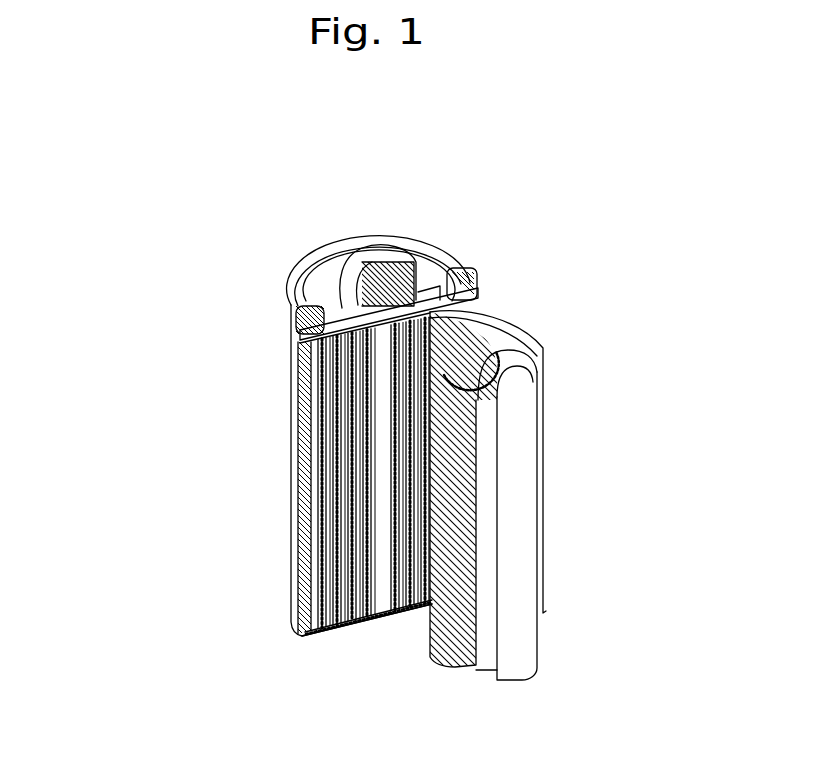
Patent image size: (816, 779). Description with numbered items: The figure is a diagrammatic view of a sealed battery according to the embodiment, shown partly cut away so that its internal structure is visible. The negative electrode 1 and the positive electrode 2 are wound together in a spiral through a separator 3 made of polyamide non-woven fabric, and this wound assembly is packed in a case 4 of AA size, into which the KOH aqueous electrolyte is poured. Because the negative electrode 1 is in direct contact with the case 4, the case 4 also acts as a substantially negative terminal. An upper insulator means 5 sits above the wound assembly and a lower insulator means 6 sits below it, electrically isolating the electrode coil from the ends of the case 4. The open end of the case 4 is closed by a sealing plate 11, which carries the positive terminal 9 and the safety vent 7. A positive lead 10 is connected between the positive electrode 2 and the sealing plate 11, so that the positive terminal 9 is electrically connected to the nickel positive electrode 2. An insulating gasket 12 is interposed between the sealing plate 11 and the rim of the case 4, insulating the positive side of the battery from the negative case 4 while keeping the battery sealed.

The negative electrode 1 is at (525, 650).
The positive electrode 2 is at (443, 663).
The separator 3 is at (578, 729).
The case 4 is at (291, 562).
The upper insulator means 5 is at (297, 338).
The lower insulator means 6 is at (353, 633).
The safety vent 7 is at (404, 268).
The positive terminal 9 is at (377, 255).
The positive lead 10 is at (428, 287).
The sealing plate 11 is at (436, 287).
The insulating gasket 12 is at (297, 318).